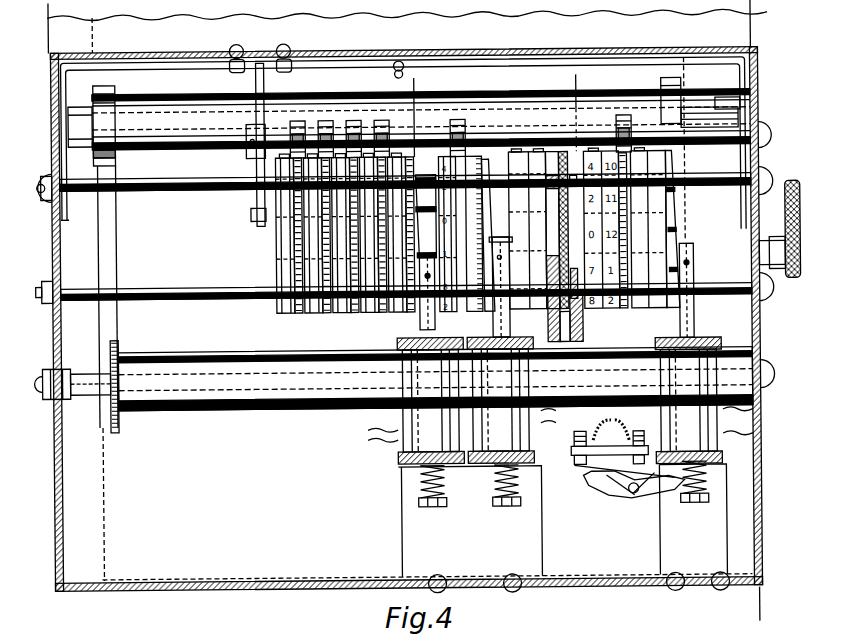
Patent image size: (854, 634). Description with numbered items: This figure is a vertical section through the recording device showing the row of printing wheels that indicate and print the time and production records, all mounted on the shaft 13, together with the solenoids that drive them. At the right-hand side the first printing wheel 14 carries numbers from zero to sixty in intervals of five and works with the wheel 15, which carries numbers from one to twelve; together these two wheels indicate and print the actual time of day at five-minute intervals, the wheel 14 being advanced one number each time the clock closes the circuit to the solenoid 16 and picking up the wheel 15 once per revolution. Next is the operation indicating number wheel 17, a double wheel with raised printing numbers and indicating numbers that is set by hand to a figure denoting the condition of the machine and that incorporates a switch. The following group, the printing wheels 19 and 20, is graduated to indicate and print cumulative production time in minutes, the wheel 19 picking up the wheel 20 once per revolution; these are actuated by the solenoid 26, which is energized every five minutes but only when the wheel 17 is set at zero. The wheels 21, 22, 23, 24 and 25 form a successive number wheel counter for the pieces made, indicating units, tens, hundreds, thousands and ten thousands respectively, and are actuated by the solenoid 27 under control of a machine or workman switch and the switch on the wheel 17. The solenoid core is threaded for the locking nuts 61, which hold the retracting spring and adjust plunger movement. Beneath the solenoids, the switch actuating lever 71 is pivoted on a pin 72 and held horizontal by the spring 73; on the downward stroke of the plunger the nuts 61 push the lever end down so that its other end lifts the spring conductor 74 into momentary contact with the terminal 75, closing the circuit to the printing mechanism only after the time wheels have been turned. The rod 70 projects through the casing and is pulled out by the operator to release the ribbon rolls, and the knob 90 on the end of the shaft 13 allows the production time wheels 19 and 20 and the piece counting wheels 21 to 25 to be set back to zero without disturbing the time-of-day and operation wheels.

The shaft 13 is at (755, 17).
The first printing wheel 14 is at (418, 80).
The wheel 15 is at (614, 306).
The solenoid 16 is at (580, 82).
The operation indicating number wheel 17 is at (542, 311).
The printing wheel 19 is at (473, 134).
The printing wheel 20 is at (442, 140).
The wheel 21 is at (404, 315).
The wheel 22 is at (378, 317).
The wheel 23 is at (349, 315).
The wheel 24 is at (320, 315).
The wheel 25 is at (290, 313).
The solenoid 26 is at (522, 417).
The solenoid 27 is at (400, 423).
The locking nuts 61 is at (687, 508).
The rod 70 is at (398, 61).
The switch actuating lever 71 is at (663, 493).
The pin 72 is at (630, 494).
The spring 73 is at (613, 488).
The spring conductor 74 is at (583, 478).
The terminal 75 is at (575, 466).
The knob 90 is at (787, 183).